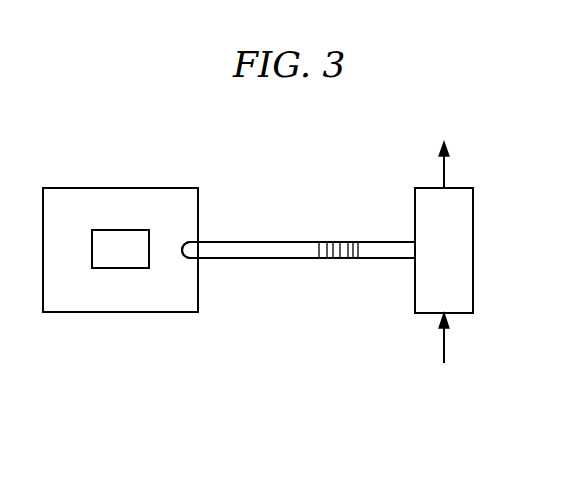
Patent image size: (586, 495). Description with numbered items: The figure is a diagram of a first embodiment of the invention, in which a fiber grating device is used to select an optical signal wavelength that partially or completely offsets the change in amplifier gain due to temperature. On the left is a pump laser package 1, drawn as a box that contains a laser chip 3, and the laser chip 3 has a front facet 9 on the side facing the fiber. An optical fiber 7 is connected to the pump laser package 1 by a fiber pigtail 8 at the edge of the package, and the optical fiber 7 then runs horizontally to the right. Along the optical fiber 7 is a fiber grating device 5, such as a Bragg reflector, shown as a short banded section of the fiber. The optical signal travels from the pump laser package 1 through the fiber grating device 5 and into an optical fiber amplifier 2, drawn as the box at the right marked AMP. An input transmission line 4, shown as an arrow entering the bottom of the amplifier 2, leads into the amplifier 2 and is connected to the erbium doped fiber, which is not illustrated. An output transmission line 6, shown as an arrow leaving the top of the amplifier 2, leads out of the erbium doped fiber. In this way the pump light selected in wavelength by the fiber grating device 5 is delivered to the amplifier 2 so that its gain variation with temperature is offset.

The pump laser package 1 is at (122, 188).
The optical fiber amplifier 2 is at (473, 250).
The laser chip 3 is at (124, 268).
The input transmission line 4 is at (444, 347).
The fiber grating device 5 is at (342, 258).
The output transmission line 6 is at (444, 172).
The optical fiber 7 is at (262, 258).
The fiber pigtail 8 is at (186, 250).
The front facet 9 is at (150, 244).